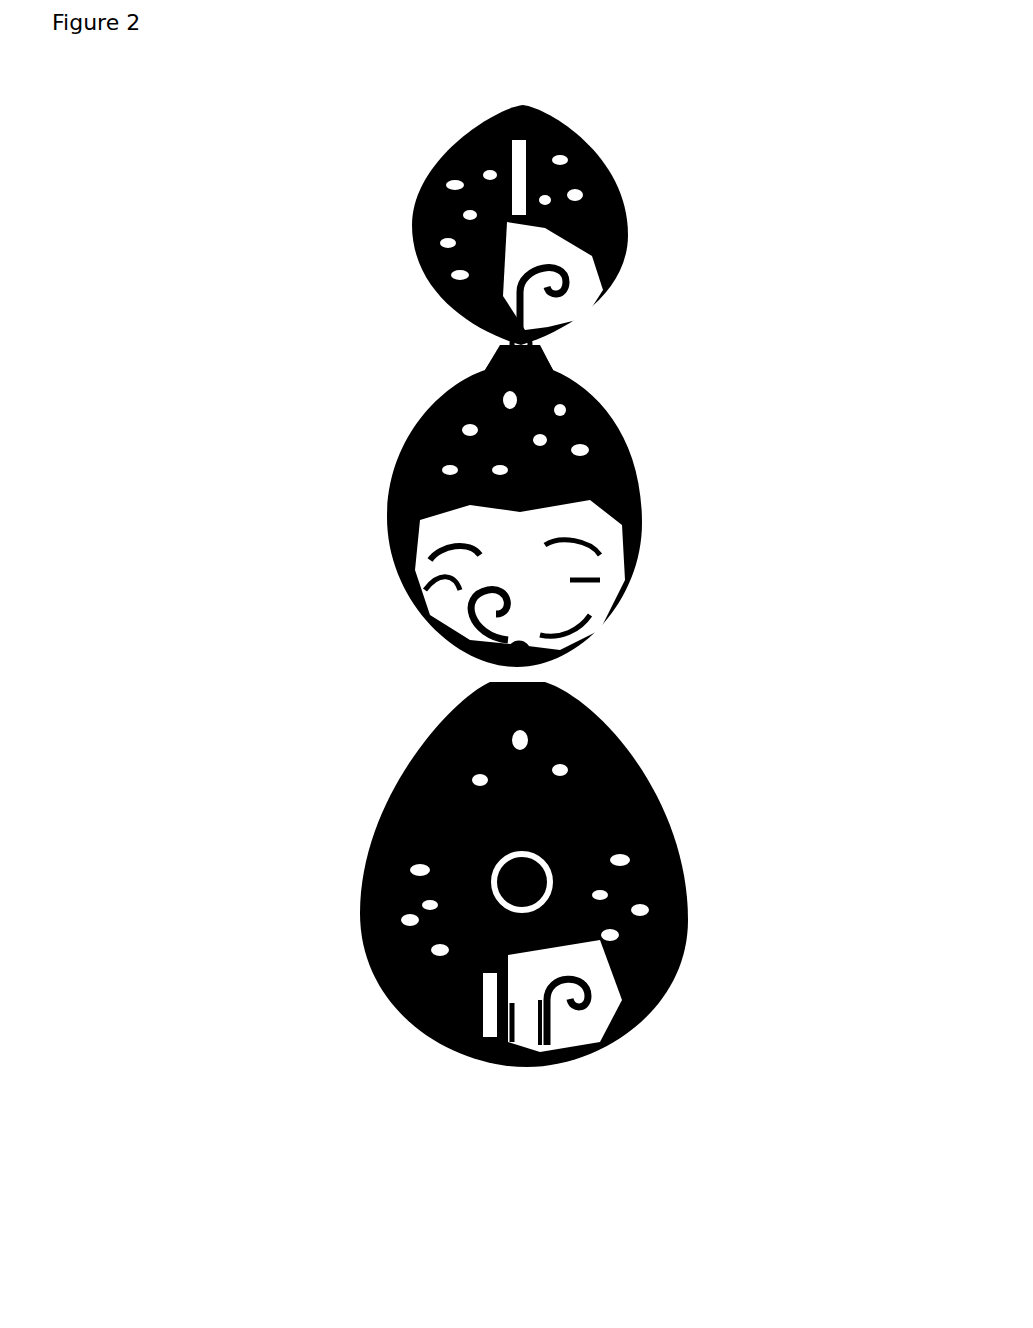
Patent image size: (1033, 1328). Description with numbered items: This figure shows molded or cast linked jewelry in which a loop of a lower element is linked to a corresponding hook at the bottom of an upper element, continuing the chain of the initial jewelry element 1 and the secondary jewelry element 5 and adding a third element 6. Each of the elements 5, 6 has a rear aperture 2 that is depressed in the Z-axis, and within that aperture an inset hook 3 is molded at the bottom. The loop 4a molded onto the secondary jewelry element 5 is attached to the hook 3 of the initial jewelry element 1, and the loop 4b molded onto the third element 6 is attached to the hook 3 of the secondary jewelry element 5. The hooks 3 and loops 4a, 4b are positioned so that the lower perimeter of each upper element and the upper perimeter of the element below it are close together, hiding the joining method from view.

The initial jewelry element 1 is at (595, 153).
The aperture 2 is at (630, 240).
The hook 3 is at (612, 302).
The loop 4a is at (493, 353).
The loop 4b is at (547, 667).
The secondary jewelry element 5 is at (630, 477).
The third element 6 is at (657, 783).